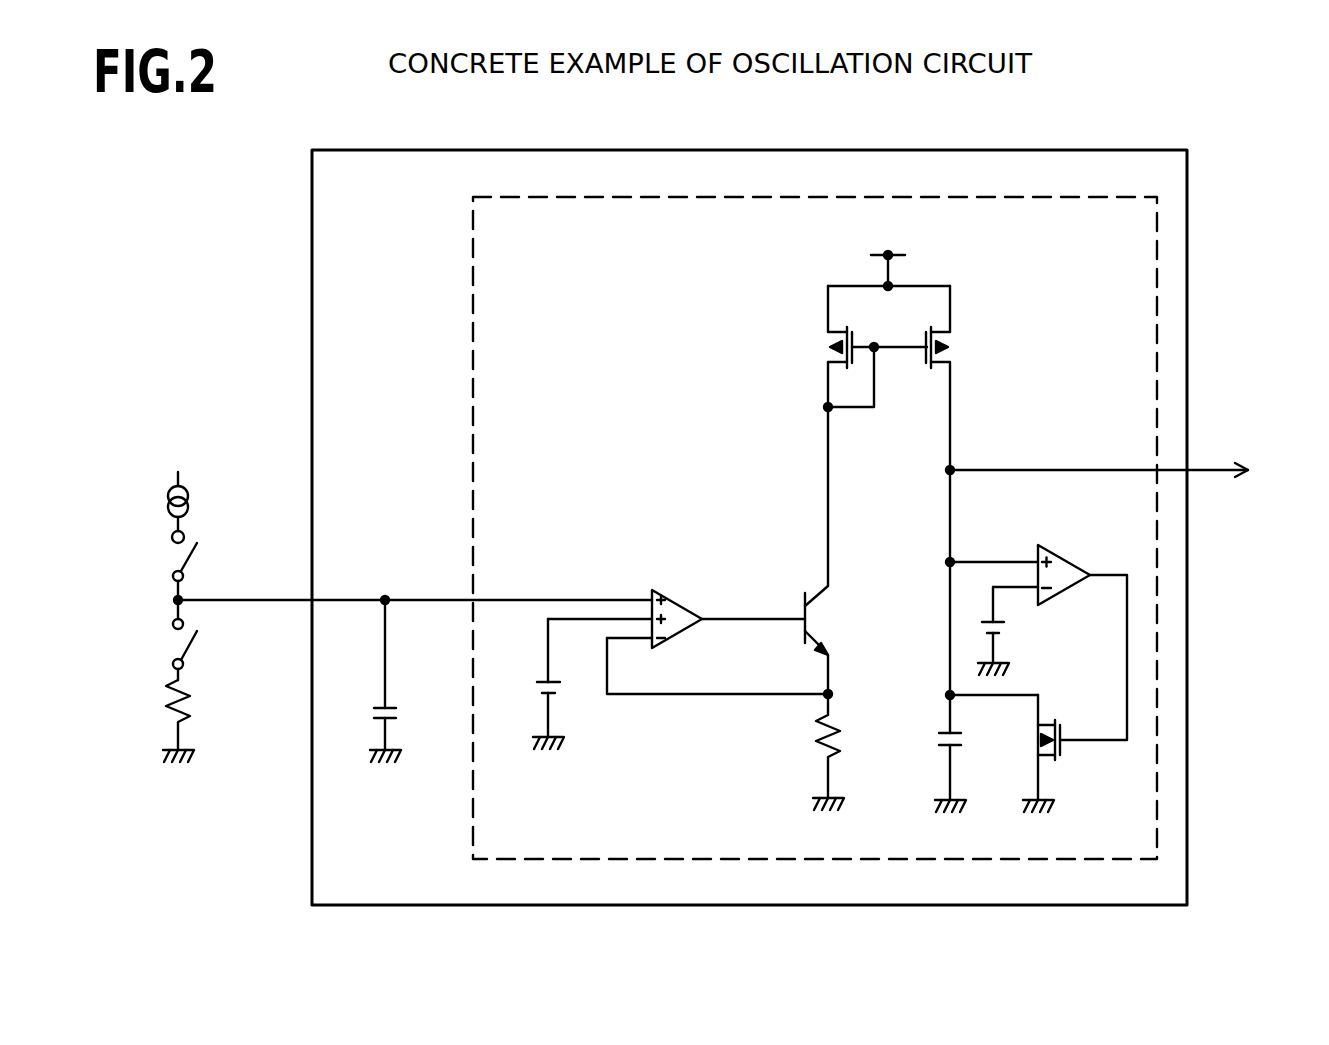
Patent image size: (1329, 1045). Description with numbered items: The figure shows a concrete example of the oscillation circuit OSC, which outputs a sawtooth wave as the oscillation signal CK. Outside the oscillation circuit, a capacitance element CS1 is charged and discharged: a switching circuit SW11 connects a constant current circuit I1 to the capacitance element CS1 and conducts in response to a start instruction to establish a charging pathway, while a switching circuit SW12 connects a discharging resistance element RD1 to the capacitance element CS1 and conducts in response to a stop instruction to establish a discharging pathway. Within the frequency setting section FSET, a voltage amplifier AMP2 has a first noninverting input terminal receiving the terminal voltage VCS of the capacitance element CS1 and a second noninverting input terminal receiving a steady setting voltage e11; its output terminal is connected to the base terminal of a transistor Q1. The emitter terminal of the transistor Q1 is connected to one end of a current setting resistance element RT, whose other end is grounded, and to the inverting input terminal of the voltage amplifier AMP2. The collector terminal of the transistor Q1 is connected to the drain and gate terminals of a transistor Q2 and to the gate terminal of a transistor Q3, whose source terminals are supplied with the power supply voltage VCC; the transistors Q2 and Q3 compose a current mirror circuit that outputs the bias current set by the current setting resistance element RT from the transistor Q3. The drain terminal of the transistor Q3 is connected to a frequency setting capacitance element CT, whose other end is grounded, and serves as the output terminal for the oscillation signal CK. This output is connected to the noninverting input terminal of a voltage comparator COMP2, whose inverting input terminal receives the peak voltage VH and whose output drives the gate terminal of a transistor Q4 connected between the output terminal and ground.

The oscillation circuit OSC is at (853, 150).
The frequency setting section FSET is at (1013, 197).
The constant current circuit I1 is at (190, 501).
The switching circuit SW11 is at (215, 565).
The switching circuit SW12 is at (215, 640).
The discharging resistance element RD1 is at (201, 721).
The terminal voltage VCS is at (413, 584).
The capacitance element CS1 is at (361, 681).
The voltage amplifier AMP2 is at (684, 604).
The steady setting voltage e11 is at (528, 684).
The transistor Q1 is at (836, 642).
The current setting resistance element RT is at (812, 752).
The power supply voltage VCC is at (895, 260).
The transistor Q2 is at (852, 436).
The transistor Q3 is at (961, 490).
The oscillation signal CK is at (1120, 471).
The voltage comparator COMP2 is at (1072, 556).
The peak voltage VH is at (1011, 631).
The frequency setting capacitance element CT is at (932, 751).
The transistor Q4 is at (1019, 750).